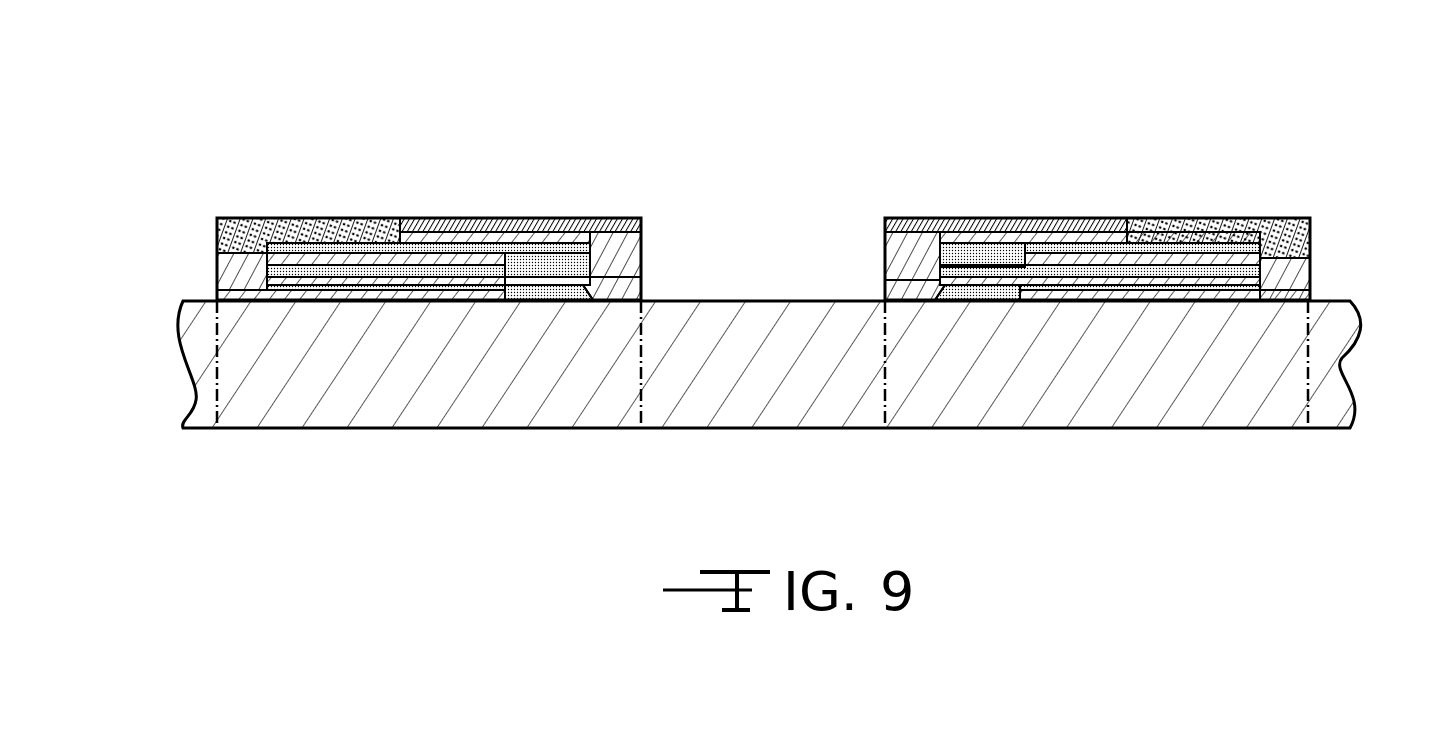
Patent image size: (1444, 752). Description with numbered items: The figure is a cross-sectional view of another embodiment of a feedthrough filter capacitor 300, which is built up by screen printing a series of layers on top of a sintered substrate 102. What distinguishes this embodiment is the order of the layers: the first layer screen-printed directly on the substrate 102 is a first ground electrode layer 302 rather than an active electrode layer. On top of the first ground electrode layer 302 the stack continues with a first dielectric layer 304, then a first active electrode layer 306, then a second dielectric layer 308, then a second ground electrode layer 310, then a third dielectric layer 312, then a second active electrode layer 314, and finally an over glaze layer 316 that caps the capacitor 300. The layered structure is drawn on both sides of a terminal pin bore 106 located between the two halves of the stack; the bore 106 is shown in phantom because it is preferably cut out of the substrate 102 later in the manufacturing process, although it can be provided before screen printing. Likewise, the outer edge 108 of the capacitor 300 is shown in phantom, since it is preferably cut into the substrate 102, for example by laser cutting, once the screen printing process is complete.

The feedthrough filter capacitor 300 is at (1329, 130).
The first ground electrode layer 302 is at (215, 298).
The first dielectric layer 304 is at (548, 292).
The first active electrode layer 306 is at (898, 292).
The second dielectric layer 308 is at (322, 268).
The second ground electrode layer 310 is at (233, 272).
The third dielectric layer 312 is at (541, 253).
The second active electrode layer 314 is at (885, 245).
The over glaze layer 316 is at (355, 218).
The substrate 102 is at (1322, 358).
The terminal pin bore 106 is at (883, 403).
The outer edge 108 is at (1300, 402).